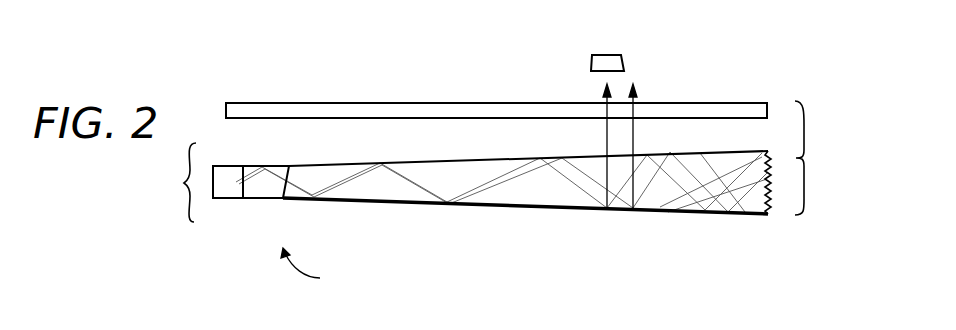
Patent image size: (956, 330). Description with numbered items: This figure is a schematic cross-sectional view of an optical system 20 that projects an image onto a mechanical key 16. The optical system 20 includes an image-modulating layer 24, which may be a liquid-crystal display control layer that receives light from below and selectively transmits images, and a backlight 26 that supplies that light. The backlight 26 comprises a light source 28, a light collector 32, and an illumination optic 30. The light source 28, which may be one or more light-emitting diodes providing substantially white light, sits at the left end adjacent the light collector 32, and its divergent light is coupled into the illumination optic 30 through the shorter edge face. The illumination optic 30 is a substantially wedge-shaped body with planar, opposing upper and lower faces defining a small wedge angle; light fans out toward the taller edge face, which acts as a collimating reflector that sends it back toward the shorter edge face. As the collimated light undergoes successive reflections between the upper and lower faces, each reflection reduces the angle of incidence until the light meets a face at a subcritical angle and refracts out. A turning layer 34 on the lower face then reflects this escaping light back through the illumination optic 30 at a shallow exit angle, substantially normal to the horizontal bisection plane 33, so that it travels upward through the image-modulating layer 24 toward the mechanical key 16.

The mechanical key 16 is at (625, 62).
The optical system 20 is at (813, 158).
The image-modulating layer 24 is at (673, 102).
The backlight 26 is at (243, 182).
The light source 28 is at (228, 166).
The illumination optic 30 is at (740, 208).
The light collector 32 is at (263, 199).
The horizontal bisection plane 33 is at (313, 270).
The turning layer 34 is at (433, 201).